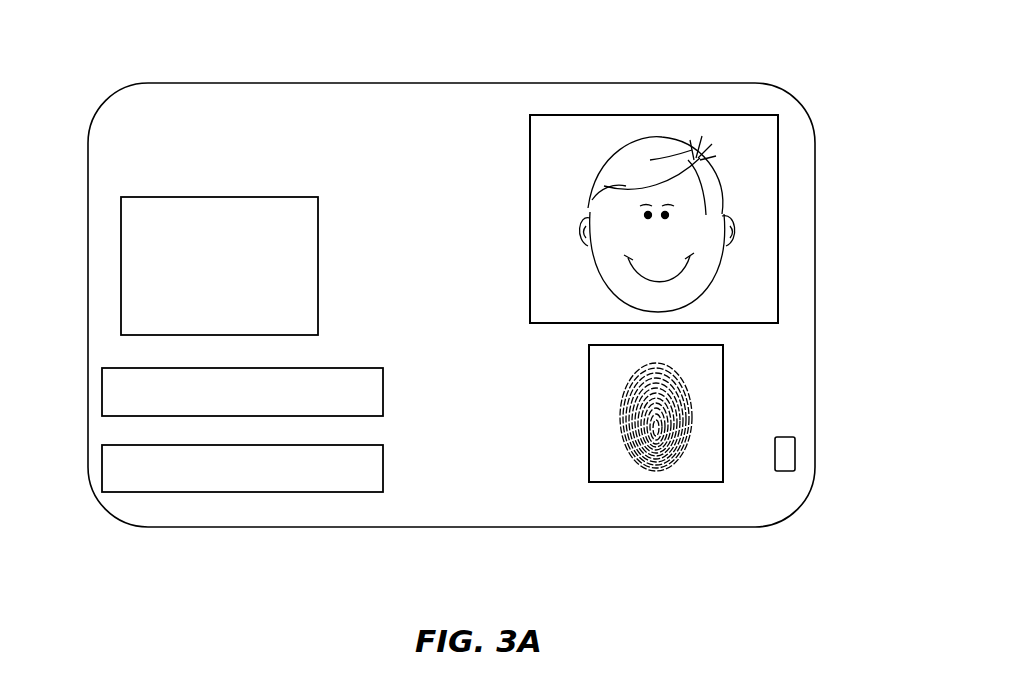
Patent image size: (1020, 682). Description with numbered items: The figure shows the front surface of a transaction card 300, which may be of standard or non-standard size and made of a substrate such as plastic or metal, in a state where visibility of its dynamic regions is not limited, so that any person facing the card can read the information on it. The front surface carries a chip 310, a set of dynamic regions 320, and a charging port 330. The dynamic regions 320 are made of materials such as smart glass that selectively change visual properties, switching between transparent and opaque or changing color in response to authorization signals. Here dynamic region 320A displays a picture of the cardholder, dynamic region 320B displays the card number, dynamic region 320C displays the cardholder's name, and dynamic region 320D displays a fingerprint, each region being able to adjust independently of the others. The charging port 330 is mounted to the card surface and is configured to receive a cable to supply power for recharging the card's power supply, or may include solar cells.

The transaction card 300 is at (192, 83).
The chip 310 is at (201, 292).
The dynamic regions 320 is at (818, 93).
The dynamic region 320A is at (653, 115).
The dynamic region 320B is at (102, 397).
The dynamic region 320C is at (102, 473).
The dynamic region 320D is at (652, 482).
The charging port 330 is at (795, 452).